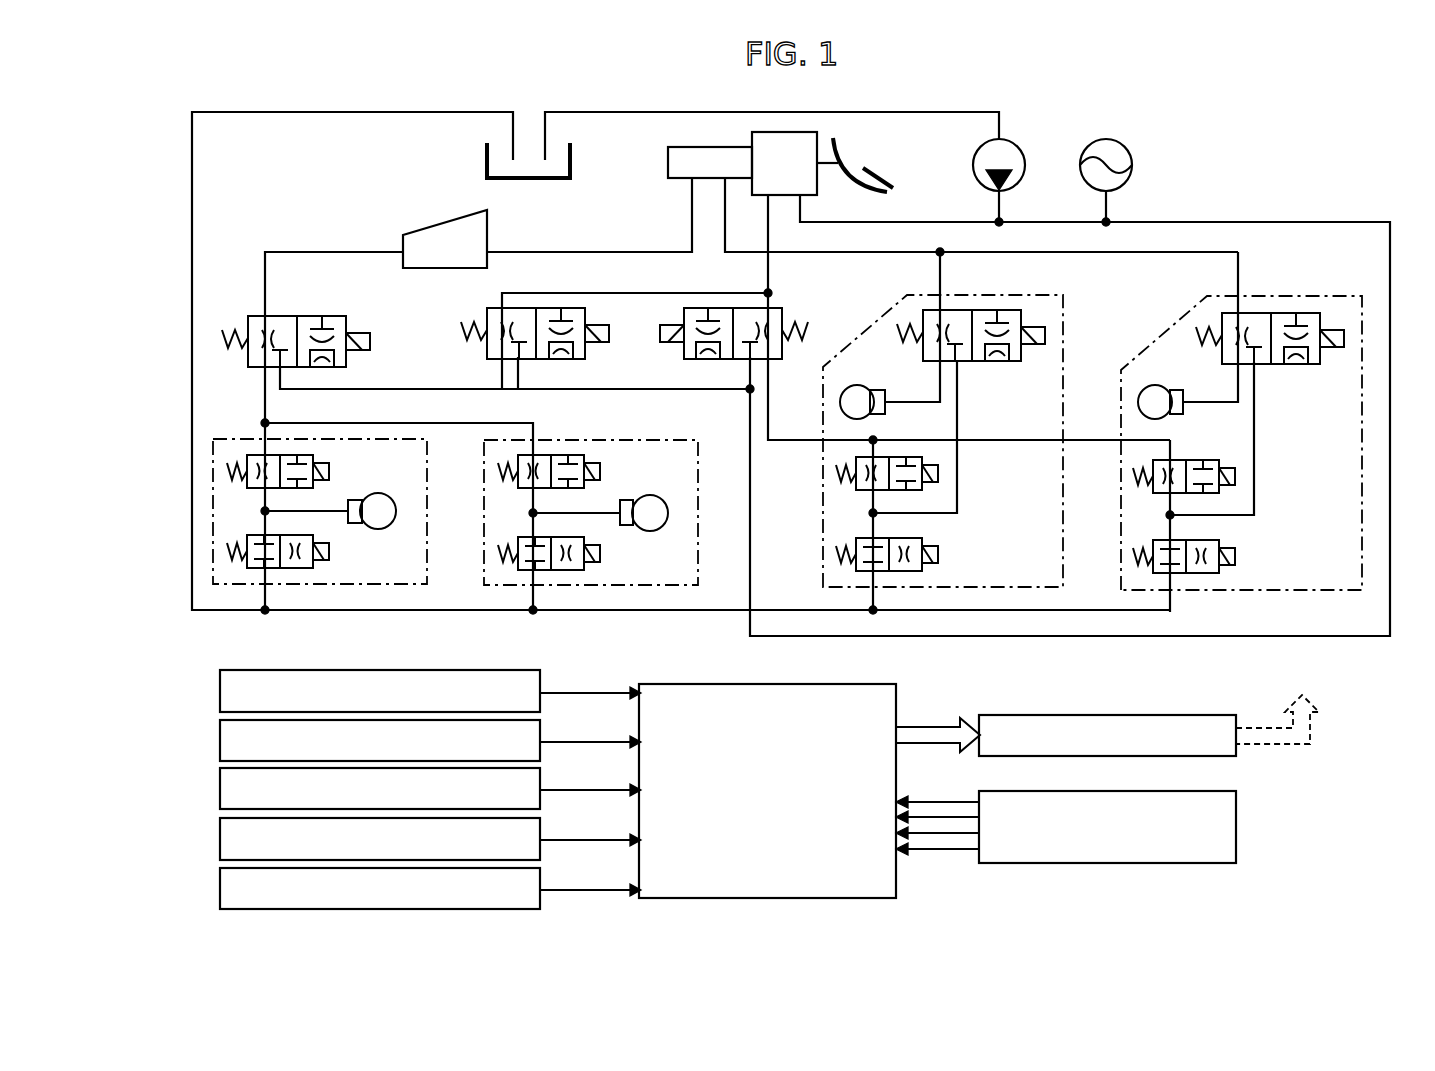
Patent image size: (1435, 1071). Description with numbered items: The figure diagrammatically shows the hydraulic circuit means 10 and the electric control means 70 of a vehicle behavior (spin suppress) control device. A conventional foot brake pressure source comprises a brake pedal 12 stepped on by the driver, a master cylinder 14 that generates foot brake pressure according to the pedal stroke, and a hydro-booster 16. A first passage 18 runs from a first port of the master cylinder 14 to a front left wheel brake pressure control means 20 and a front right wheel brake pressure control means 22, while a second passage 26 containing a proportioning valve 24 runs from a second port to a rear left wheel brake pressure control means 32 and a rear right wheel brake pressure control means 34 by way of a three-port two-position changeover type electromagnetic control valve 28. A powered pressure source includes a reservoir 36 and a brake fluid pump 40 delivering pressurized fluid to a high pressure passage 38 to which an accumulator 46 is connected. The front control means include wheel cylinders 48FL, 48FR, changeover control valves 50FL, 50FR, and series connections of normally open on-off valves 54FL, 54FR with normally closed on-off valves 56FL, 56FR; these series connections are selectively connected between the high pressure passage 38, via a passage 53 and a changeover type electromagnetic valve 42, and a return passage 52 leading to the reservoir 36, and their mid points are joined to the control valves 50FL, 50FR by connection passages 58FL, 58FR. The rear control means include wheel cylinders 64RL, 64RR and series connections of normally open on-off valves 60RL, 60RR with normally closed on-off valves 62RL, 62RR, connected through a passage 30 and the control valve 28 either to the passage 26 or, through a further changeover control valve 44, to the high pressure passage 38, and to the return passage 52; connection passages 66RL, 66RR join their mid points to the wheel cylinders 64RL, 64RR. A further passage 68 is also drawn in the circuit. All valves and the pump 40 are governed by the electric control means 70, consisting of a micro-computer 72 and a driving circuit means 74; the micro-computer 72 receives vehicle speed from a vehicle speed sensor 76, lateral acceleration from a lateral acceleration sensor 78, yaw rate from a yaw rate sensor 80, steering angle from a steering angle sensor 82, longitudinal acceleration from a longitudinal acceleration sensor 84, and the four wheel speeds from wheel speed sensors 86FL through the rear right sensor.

The hydraulic circuit means 10 is at (176, 172).
The brake pedal 12 is at (884, 171).
The master cylinder 14 is at (688, 147).
The hydro-booster 16 is at (1070, 384).
The first passage 18 is at (800, 254).
The front left wheel brake pressure control means 20 is at (870, 318).
The front right wheel brake pressure control means 22 is at (1160, 336).
The proportioning valve 24 is at (425, 228).
The second passage 26 is at (287, 250).
The 3-ports-2-positions changeover type electromagnetic control valve 28 is at (282, 314).
The passage 30 is at (268, 412).
The rear left wheel brake pressure control means 32 is at (233, 438).
The rear right wheel brake pressure control means 34 is at (568, 590).
The reservoir 36 is at (486, 160).
The high pressure passage 38 is at (1268, 221).
The brake fluid pump 40 is at (1027, 168).
The 3-ports-2-positions changeover type electromagnetic valve 42 is at (712, 308).
The 3-ports-2-positions changeover type electromagnetic control valve 44 is at (540, 308).
The accumulator 46 is at (1132, 167).
The wheel cylinder 48FL is at (868, 416).
The wheel cylinder 48FR is at (1166, 417).
The 3-ports-2-positions changeover type electromagnetic control valve 50FL is at (985, 310).
The 3-ports-2-positions changeover type electromagnetic control valve 50FR is at (1256, 313).
The return passage 52 is at (790, 608).
The passage 53 is at (787, 446).
The normally open type electromagnetic on-off valve 54FL is at (918, 491).
The normally open type electromagnetic on-off valve 54FR is at (1215, 492).
The normally closed type electromagnetic on-off valve 56FL is at (915, 540).
The normally closed type electromagnetic on-off valve 56FR is at (1212, 541).
The connection passage 58FL is at (957, 390).
The connection passage 58FR is at (1256, 392).
The normally open type electromagnetic on-off valve 60RL is at (258, 488).
The normally open type electromagnetic on-off valve 60RR is at (560, 455).
The normally closed type electromagnetic on-off valve 62RL is at (256, 570).
The normally closed type electromagnetic on-off valve 62RR is at (526, 572).
The wheel cylinder 64RL is at (378, 530).
The wheel cylinder 64RR is at (650, 533).
The connection passage 66RL is at (330, 508).
The connection passage 66RR is at (618, 500).
The rear wheel return conduit 68 is at (410, 388).
The electric control means 70 is at (1362, 751).
The micro-computer 72 is at (767, 791).
The driving circuit means 74 is at (1177, 757).
The vehicle speed sensor 76 is at (220, 692).
The lateral acceleration sensor 78 is at (220, 740).
The yaw rate sensor 80 is at (220, 788).
The steering angle sensor 82 is at (220, 838).
The longitudinal acceleration sensor 84 is at (220, 888).
The wheel speed sensors 86FL is at (1236, 822).